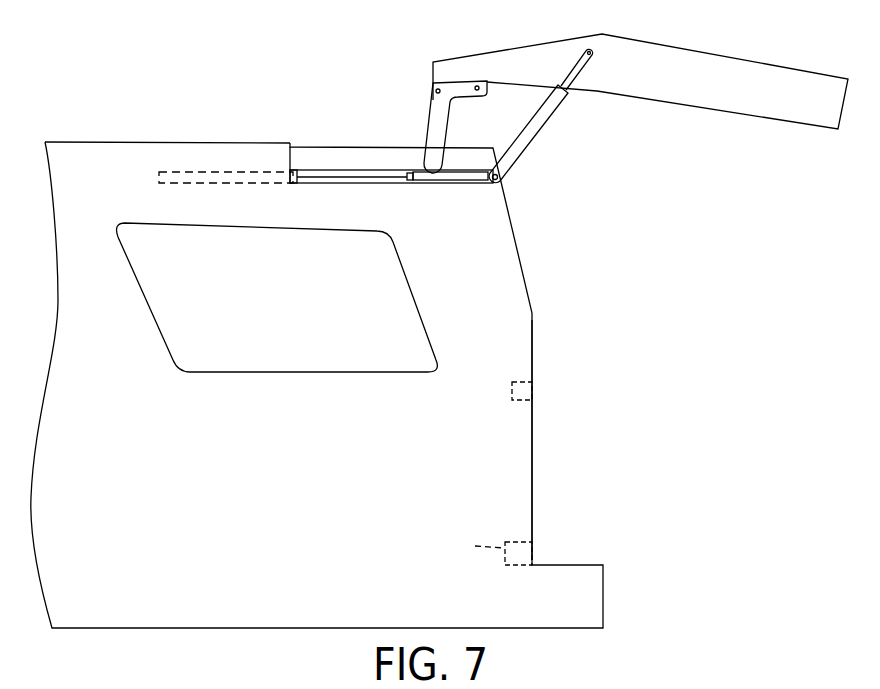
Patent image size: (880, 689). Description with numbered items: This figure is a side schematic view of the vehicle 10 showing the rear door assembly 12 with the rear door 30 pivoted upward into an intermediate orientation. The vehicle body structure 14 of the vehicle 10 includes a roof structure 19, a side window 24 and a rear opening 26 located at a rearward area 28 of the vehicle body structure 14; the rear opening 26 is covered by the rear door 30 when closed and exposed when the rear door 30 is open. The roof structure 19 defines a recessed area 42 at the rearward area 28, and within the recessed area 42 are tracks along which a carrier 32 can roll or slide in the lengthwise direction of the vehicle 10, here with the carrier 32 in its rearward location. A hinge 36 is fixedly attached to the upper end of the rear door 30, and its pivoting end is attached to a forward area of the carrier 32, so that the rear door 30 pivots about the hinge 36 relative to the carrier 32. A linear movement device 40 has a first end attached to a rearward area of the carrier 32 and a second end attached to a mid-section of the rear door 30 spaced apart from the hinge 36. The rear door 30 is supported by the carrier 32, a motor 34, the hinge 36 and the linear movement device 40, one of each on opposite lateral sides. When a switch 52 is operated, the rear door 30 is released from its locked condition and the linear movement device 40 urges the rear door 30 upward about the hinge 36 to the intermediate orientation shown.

The vehicle 10 is at (92, 74).
The rear door assembly 12 is at (485, 46).
The vehicle body structure 14 is at (88, 165).
The roof structure 19 is at (203, 138).
The side window 24 is at (245, 315).
The rear opening 26 is at (532, 475).
The rearward area 28 is at (358, 138).
The rear door 30 is at (708, 75).
The carrier 32 is at (457, 175).
The motor 34 is at (232, 177).
The hinge 36 is at (437, 126).
The linear movement device 40 is at (530, 132).
The recessed area 42 is at (320, 160).
The switch 52 is at (534, 395).